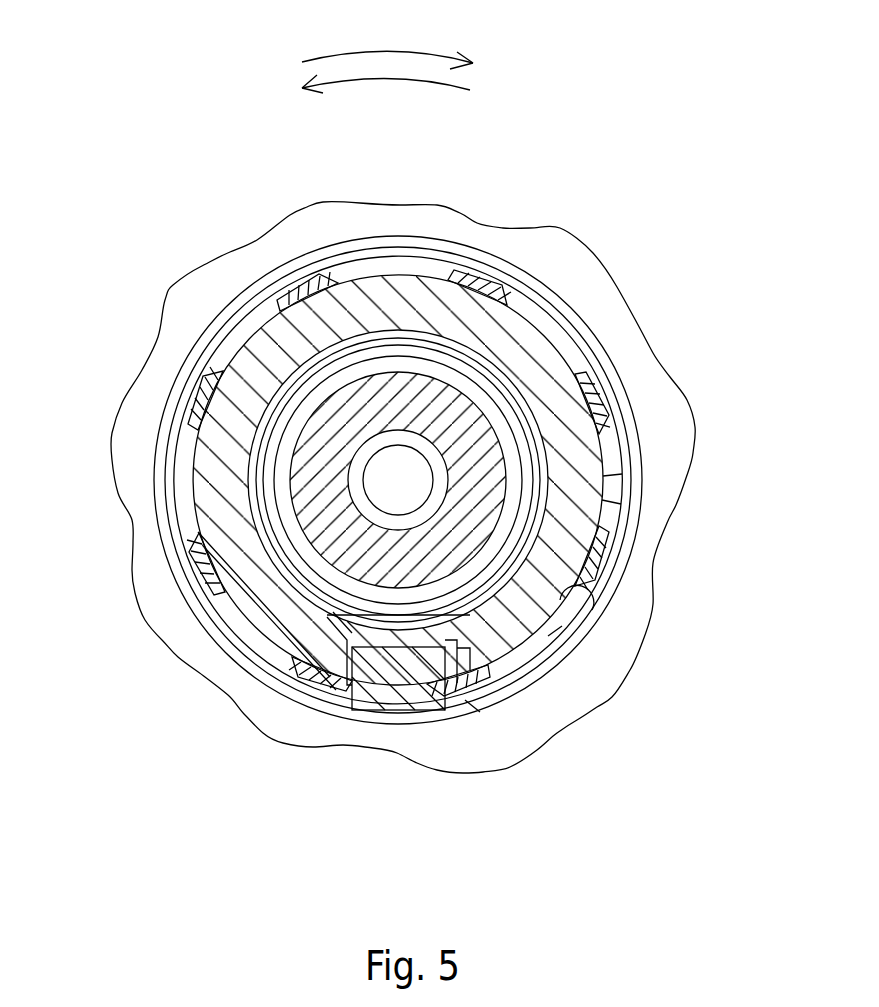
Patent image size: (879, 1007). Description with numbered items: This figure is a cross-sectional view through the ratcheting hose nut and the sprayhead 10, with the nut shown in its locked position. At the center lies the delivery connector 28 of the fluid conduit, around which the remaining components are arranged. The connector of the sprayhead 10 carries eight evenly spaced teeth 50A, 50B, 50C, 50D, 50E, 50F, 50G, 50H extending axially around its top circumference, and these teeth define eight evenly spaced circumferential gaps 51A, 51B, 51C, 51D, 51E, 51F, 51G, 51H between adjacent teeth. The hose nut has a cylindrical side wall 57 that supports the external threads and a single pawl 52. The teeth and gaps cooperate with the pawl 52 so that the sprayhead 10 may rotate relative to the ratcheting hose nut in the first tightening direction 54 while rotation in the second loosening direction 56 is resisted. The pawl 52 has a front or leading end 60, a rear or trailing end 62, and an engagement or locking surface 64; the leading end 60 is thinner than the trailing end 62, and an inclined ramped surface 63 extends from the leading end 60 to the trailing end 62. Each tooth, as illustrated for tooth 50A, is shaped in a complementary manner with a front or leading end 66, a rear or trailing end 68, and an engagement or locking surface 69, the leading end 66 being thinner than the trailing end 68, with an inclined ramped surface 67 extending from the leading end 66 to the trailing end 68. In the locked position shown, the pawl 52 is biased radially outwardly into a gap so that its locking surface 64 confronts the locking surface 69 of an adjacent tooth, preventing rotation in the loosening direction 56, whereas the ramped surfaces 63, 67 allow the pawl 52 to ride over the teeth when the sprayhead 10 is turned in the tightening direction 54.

The sprayhead 10 is at (663, 407).
The delivery connector 28 is at (493, 398).
The tooth 50A is at (600, 560).
The tooth 50B is at (478, 685).
The tooth 50C is at (307, 695).
The tooth 50D is at (197, 570).
The tooth 50E is at (195, 403).
The tooth 50F is at (300, 287).
The tooth 50G is at (473, 273).
The tooth 50H is at (595, 407).
The gap 51A is at (552, 645).
The gap 51B is at (378, 700).
The gap 51C is at (253, 642).
The gap 51D is at (178, 488).
The gap 51E is at (240, 333).
The gap 51F is at (400, 265).
The gap 51G is at (537, 320).
The gap 51H is at (617, 455).
The pawl 52 is at (545, 678).
The first tightening direction 54 is at (422, 82).
The second loosening direction 56 is at (373, 60).
The cylindrical side wall 57 is at (250, 607).
The leading end 60 is at (377, 698).
The trailing end 62 is at (445, 705).
The ramped surface 63 is at (407, 717).
The locking surface 64 is at (472, 707).
The leading end 66 is at (617, 507).
The ramped surface 67 is at (605, 485).
The trailing end 68 is at (548, 642).
The locking surface 69 is at (572, 620).